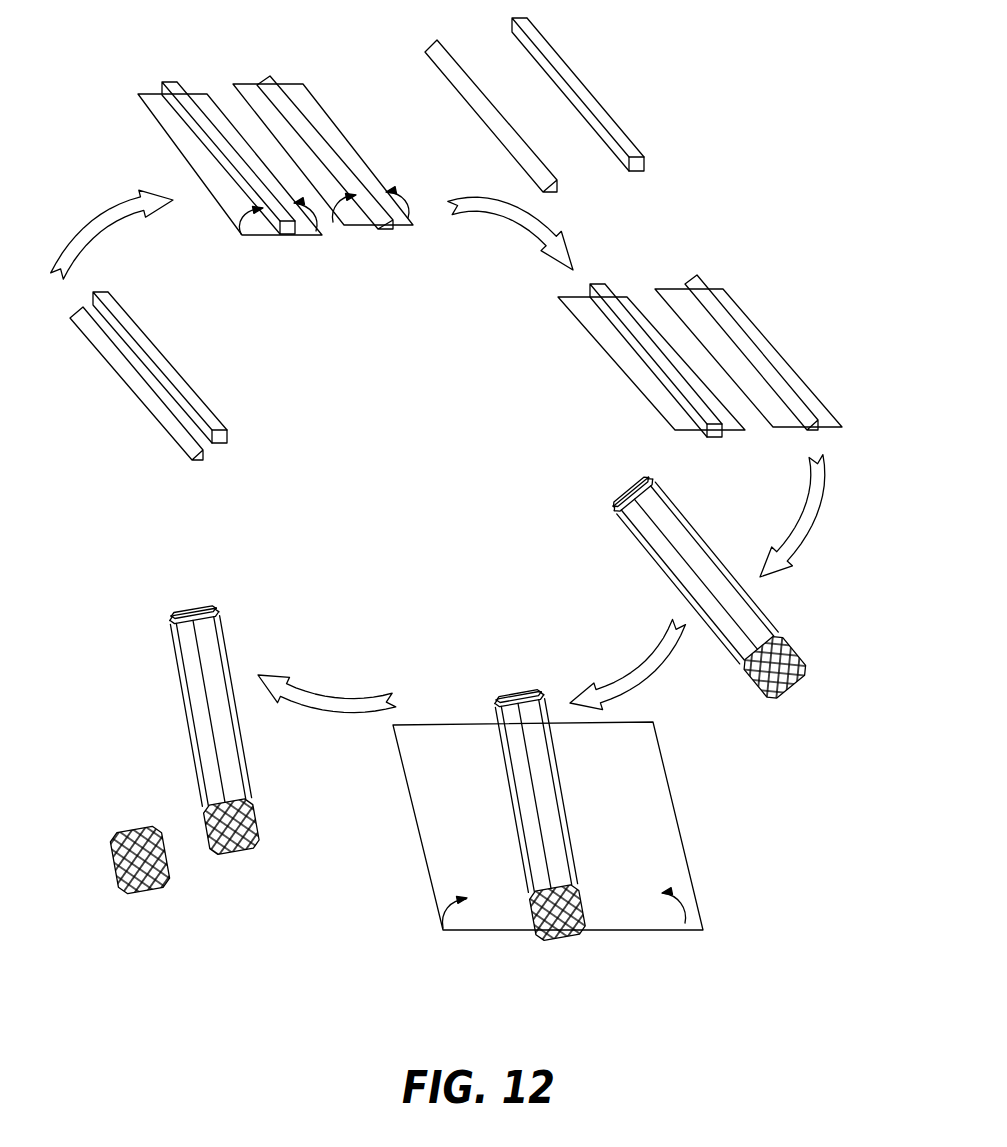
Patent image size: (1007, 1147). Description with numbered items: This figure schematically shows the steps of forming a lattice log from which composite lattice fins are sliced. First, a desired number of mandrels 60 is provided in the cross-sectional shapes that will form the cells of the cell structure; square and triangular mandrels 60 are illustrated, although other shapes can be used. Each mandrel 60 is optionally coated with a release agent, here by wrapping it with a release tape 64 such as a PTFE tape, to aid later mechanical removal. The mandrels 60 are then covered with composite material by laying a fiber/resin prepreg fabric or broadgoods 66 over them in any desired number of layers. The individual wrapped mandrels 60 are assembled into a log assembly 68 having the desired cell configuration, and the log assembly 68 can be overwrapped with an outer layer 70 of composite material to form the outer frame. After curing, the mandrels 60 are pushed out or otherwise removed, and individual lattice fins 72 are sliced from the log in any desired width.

The mandrel 60 is at (177, 428).
The release tape 64 is at (252, 92).
The fiber/resin prepreg fabric or broadgoods 66 is at (678, 300).
The log assembly 68 is at (730, 607).
The outer layer 70 is at (668, 865).
The lattice fin 72 is at (157, 890).